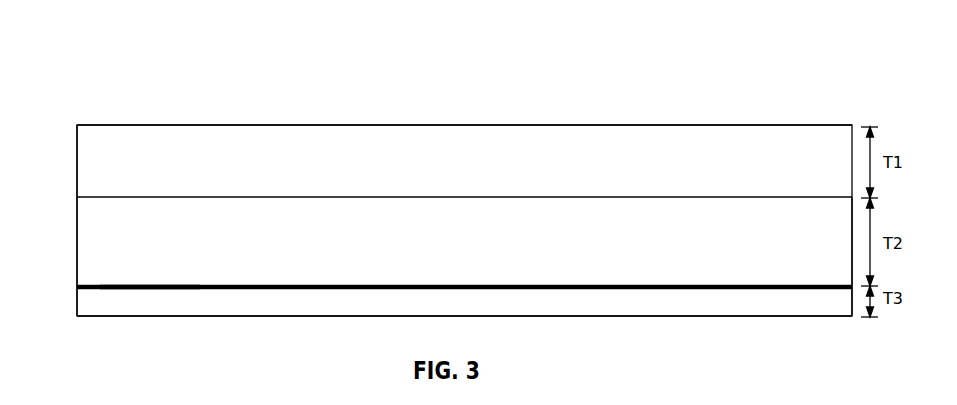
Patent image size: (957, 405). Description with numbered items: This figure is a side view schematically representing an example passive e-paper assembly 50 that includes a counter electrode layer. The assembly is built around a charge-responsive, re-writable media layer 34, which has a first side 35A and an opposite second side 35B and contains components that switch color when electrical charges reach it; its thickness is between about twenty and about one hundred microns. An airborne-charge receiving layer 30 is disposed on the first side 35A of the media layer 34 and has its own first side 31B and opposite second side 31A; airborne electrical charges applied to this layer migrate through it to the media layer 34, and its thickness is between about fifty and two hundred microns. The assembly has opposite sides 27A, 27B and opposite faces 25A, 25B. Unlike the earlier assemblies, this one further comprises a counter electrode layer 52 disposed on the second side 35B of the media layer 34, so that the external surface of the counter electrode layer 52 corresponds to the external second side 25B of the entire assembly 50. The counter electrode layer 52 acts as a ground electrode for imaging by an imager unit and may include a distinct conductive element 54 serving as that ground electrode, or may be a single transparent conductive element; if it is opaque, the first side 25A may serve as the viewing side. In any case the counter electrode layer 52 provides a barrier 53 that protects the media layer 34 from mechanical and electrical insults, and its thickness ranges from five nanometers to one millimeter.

The passive e-paper assembly 50 is at (126, 90).
The airborne-charge receiving layer 30 is at (77, 162).
The first side of airborne-charge receiving layer 31B is at (236, 125).
The second side of airborne-charge receiving layer 31A is at (177, 197).
The first side of e-paper assembly 25A is at (755, 125).
The second side of e-paper assembly 25B is at (753, 316).
The first side of re-writable media layer 35A is at (205, 198).
The second side of re-writable media layer 35B is at (200, 285).
The charge-responsive re-writable media layer 34 is at (77, 242).
The first side edge of e-paper assembly 27A is at (77, 262).
The second side edge of e-paper assembly 27B is at (852, 233).
The counter electrode layer 52 is at (70, 301).
The barrier 53 is at (218, 312).
The conductive element 54 is at (145, 289).